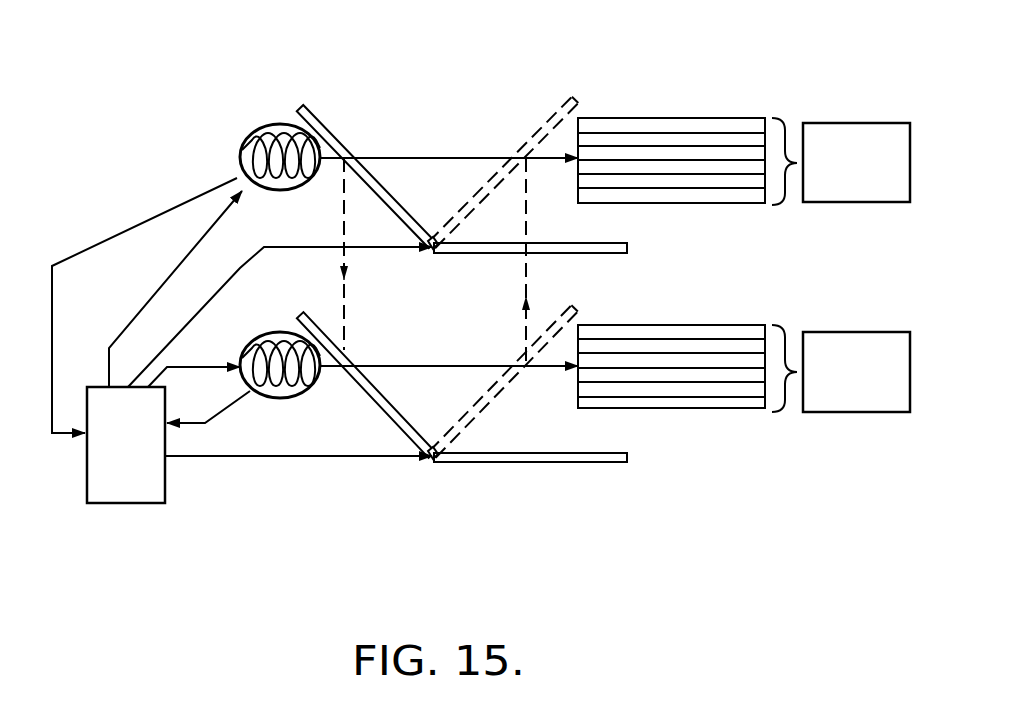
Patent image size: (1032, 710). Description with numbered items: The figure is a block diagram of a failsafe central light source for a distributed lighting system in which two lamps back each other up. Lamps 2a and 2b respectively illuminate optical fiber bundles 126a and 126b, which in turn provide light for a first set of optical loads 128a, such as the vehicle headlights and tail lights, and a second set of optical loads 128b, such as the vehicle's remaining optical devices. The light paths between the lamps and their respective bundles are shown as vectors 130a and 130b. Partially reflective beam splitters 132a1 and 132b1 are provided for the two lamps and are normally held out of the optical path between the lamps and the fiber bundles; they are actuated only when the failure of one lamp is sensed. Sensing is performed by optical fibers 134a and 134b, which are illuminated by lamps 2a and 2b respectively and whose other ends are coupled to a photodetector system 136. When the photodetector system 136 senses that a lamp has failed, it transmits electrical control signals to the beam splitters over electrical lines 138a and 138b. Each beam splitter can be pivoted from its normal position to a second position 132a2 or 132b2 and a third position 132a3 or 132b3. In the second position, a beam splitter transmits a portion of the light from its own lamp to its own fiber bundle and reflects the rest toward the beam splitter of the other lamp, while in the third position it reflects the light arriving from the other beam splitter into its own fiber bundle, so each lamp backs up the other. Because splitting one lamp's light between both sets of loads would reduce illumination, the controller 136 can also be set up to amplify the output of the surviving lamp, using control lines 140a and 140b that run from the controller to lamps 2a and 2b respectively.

The lamp 2a is at (246, 131).
The lamp 2b is at (263, 338).
The optical fiber bundle 126a is at (672, 114).
The optical fiber bundle 126b is at (704, 322).
The first set of optical loads 128a is at (846, 123).
The second set of optical loads 128b is at (852, 330).
The light path vector 130a is at (430, 157).
The light path vector 130b is at (460, 364).
The partially reflective beam splitter 132a1 is at (555, 242).
The second position of beam splitter 132a2 is at (322, 106).
The third position of beam splitter 132a3 is at (547, 108).
The partially reflective beam splitter 132b1 is at (566, 464).
The second position of beam splitter 132b2 is at (574, 312).
The third position of beam splitter 132b3 is at (323, 316).
The optical fiber 134a is at (173, 208).
The optical fiber 134b is at (212, 424).
The photodetector system 136 is at (165, 497).
The electrical line 138a is at (240, 267).
The electrical line 138b is at (346, 460).
The control line 140a is at (174, 272).
The control line 140b is at (185, 369).